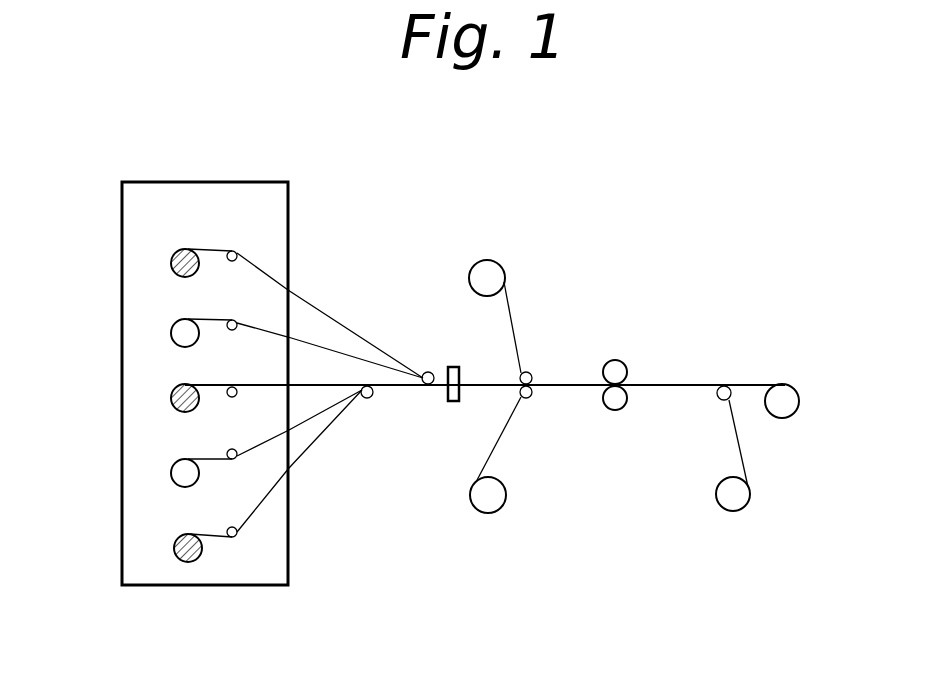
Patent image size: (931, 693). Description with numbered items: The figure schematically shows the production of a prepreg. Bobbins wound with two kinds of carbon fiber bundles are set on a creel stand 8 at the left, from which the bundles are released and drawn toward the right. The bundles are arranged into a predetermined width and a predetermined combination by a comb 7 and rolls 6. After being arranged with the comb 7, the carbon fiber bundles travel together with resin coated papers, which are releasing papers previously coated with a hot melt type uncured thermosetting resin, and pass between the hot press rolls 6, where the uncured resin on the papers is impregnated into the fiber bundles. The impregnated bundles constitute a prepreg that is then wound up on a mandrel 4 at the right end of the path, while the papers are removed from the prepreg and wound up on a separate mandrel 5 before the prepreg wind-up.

The mandrel 4 is at (790, 384).
The mandrel 5 is at (730, 511).
The hot press rolls 6 is at (617, 360).
The comb 7 is at (447, 366).
The creel stand 8 is at (220, 180).